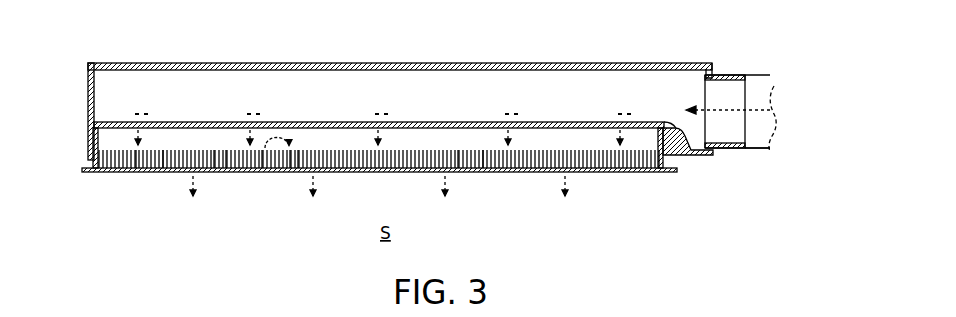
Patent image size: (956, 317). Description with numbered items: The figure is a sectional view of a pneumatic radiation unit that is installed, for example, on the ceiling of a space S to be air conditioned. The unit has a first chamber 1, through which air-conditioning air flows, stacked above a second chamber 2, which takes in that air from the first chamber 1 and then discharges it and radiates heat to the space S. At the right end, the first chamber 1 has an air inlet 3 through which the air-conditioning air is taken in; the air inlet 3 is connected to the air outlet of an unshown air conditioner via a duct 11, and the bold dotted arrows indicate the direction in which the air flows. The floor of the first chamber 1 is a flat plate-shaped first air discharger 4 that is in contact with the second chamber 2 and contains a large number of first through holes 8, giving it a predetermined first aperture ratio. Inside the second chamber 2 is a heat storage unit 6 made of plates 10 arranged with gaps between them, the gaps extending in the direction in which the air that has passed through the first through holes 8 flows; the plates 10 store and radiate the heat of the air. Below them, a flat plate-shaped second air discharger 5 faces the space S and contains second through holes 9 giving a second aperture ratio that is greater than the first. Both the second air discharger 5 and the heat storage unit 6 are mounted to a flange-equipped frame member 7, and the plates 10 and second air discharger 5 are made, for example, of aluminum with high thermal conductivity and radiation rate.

The first chamber 1 is at (574, 58).
The second chamber 2 is at (550, 176).
The air inlet 3 is at (737, 84).
The first air discharger 4 is at (497, 121).
The second air discharger 5 is at (516, 170).
The heat storage unit 6 is at (262, 171).
The flange-equipped frame member 7 is at (678, 158).
The first through holes 8 is at (319, 120).
The second through holes 9 is at (138, 171).
The plates 10 is at (213, 171).
The duct 11 is at (750, 150).